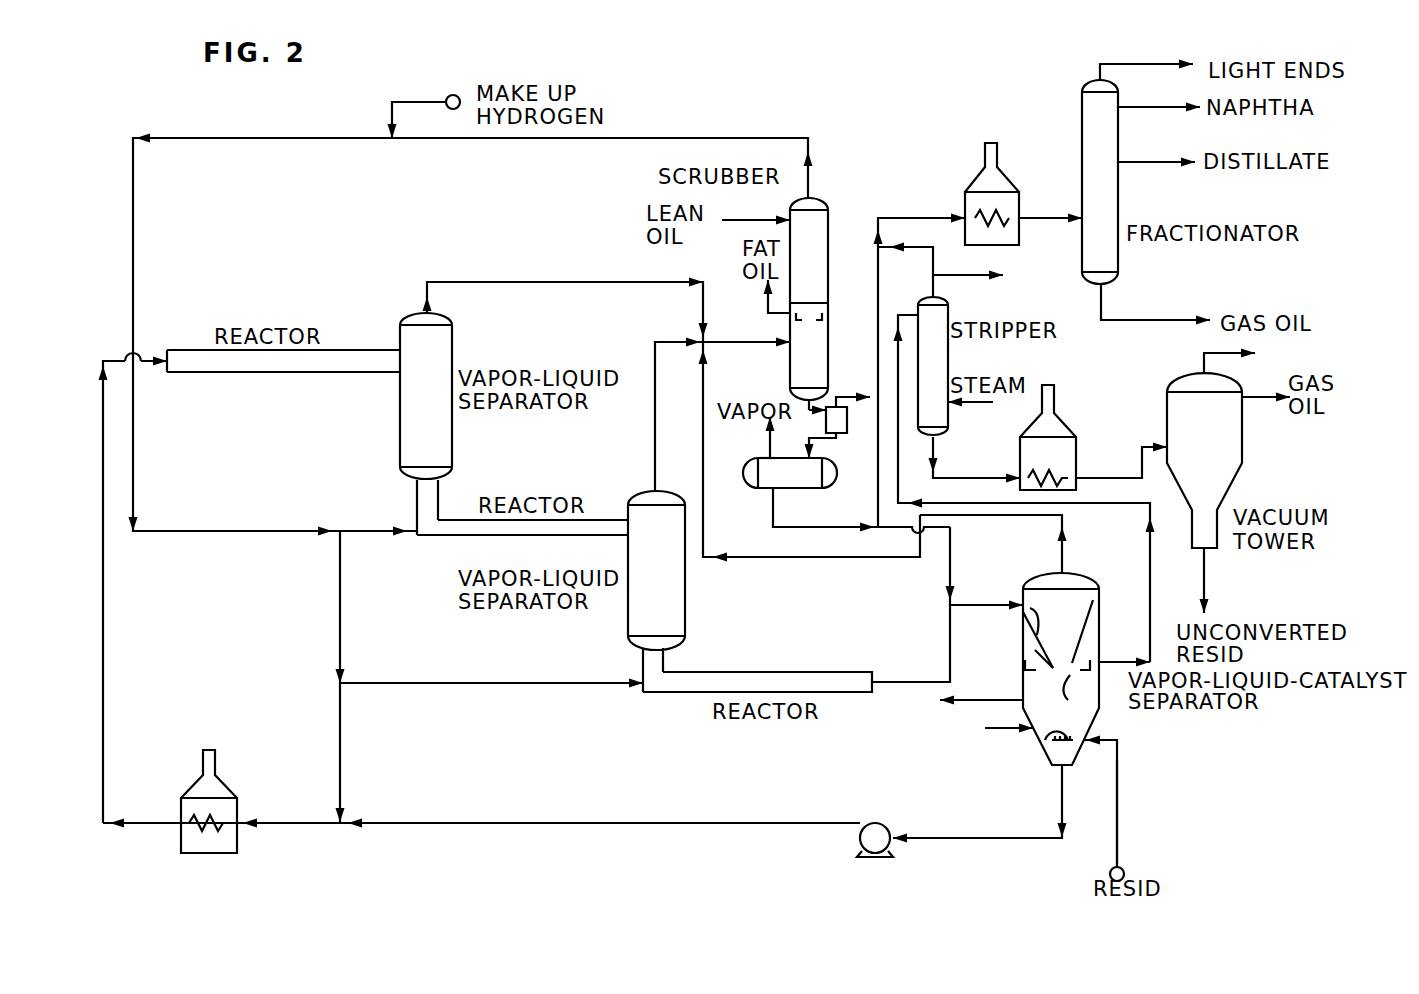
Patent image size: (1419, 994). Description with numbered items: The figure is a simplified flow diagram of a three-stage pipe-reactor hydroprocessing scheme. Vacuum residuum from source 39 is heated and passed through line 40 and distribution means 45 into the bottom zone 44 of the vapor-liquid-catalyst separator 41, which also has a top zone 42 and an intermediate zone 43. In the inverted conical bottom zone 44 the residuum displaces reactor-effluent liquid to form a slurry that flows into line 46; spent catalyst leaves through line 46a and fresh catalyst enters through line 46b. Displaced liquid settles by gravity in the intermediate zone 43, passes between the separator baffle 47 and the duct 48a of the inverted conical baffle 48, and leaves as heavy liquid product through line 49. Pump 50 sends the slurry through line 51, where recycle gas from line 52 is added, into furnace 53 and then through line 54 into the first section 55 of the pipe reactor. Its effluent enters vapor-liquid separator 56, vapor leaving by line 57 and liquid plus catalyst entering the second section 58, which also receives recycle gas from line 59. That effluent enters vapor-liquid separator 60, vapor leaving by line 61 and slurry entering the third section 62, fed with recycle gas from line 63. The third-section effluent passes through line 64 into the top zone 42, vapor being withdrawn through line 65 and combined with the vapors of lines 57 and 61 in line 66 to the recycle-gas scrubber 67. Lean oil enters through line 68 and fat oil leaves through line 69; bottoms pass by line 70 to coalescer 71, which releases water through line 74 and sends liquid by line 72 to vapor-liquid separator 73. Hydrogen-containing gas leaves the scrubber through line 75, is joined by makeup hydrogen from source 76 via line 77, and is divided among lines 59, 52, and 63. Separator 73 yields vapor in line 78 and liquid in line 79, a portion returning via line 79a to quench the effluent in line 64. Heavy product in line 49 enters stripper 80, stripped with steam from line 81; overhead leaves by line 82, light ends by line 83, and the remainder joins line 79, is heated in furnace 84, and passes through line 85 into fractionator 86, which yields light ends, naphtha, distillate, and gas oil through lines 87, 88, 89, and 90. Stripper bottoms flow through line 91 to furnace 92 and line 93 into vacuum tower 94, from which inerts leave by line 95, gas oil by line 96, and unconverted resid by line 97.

The residuum source 39 is at (1124, 867).
The residuum feed line 40 is at (1117, 808).
The vapor-liquid-catalyst separator 41 is at (1020, 622).
The top zone 42 is at (1023, 598).
The intermediate zone 43 is at (1098, 630).
The bottom zone 44 is at (1075, 724).
The distribution means 45 is at (1040, 748).
The slurry line 46 is at (1062, 805).
The spent catalyst withdrawal line 46a is at (980, 708).
The fresh catalyst addition line 46b is at (1000, 738).
The separator baffle 47 is at (1025, 666).
The inverted conical baffle 48 is at (1037, 640).
The duct 48a is at (1035, 655).
The heavy liquid product line 49 is at (1150, 562).
The pump 50 is at (878, 857).
The slurry feed line 51 is at (297, 823).
The recycle gas line 52 is at (340, 620).
The furnace 53 is at (228, 785).
The heated mixture line 54 is at (103, 655).
The first section of pipe reactor 55 is at (318, 372).
The vapor-liquid separator 56 is at (400, 422).
The vapor line 57 is at (500, 282).
The second section of pipe reactor 58 is at (447, 535).
The recycle gas line 59 is at (378, 531).
The vapor-liquid separator 60 is at (686, 598).
The vapor line 61 is at (655, 438).
The third section of pipe reactor 62 is at (672, 692).
The recycle gas line 63 is at (530, 683).
The third section effluent line 64 is at (970, 605).
The vapor withdrawal line 65 is at (825, 557).
The combined vapor line 66 is at (752, 342).
The recycle-gas scrubber 67 is at (826, 204).
The lean oil line 68 is at (772, 220).
The fat oil line 69 is at (768, 290).
The liquid product line 70 is at (784, 437).
The coalescer 71 is at (847, 425).
The coalescer liquid line 72 is at (818, 440).
The vapor-liquid separator 73 is at (790, 488).
The water line 74 is at (840, 397).
The hydrogen-containing gas line 75 is at (700, 138).
The makeup hydrogen source 76 is at (453, 95).
The makeup hydrogen line 77 is at (392, 120).
The vapor line 78 is at (770, 446).
The liquid line 79 is at (780, 527).
The liquid branch line 79a is at (895, 527).
The stripper 80 is at (948, 363).
The steam line 81 is at (990, 402).
The stripper overhead line 82 is at (930, 262).
The light ends line 83 is at (950, 275).
The furnace 84 is at (975, 180).
The fractionator feed line 85 is at (1050, 220).
The fractionator 86 is at (1082, 160).
The light ends line 87 is at (1130, 64).
The naphtha line 88 is at (1158, 107).
The distillate line 89 is at (1143, 162).
The gas oil line 90 is at (1172, 297).
The stripper bottoms line 91 is at (955, 478).
The furnace 92 is at (1058, 418).
The vacuum tower feed line 93 is at (1120, 478).
The vacuum tower 94 is at (1244, 456).
The inerts line 95 is at (1204, 353).
The gas oil line 96 is at (1262, 402).
The unconverted resid line 97 is at (1204, 580).